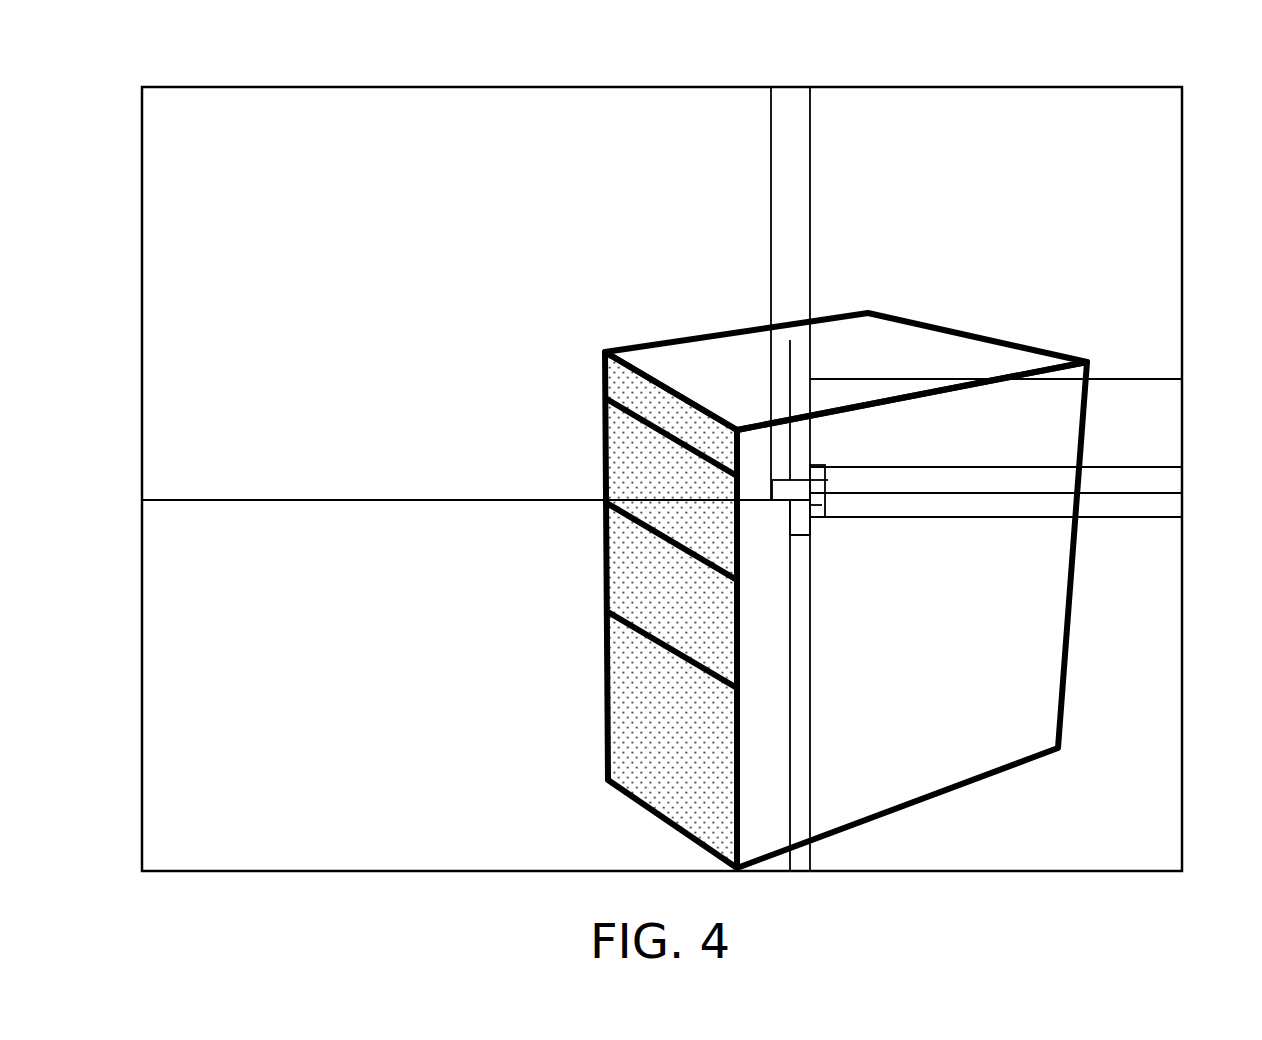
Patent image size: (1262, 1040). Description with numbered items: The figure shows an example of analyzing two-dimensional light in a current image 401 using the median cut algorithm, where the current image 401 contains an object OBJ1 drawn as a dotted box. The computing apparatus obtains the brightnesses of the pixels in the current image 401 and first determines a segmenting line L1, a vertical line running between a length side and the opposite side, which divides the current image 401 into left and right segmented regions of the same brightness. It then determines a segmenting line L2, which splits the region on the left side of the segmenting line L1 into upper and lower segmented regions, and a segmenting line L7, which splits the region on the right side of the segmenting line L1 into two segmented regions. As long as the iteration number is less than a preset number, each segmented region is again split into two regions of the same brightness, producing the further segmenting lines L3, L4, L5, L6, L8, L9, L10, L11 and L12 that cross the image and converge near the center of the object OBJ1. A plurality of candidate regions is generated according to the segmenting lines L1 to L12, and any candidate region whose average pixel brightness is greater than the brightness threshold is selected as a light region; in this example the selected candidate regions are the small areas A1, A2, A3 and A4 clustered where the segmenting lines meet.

The current image 401 is at (1185, 192).
The object OBJ1 is at (977, 336).
The segmenting line L1 is at (810, 110).
The segmenting line L2 is at (168, 500).
The segmenting line L3 is at (771, 110).
The segmenting line L4 is at (790, 340).
The segmenting line L5 is at (790, 862).
The segmenting line L6 is at (800, 537).
The segmenting line L7 is at (1162, 493).
The segmenting line L8 is at (1160, 379).
The segmenting line L9 is at (1162, 467).
The segmenting line L10 is at (828, 480).
The segmenting line L11 is at (1160, 517).
The segmenting line L12 is at (822, 505).
The candidate region A1 is at (788, 488).
The candidate region A2 is at (797, 515).
The candidate region A3 is at (818, 466).
The candidate region A4 is at (820, 525).